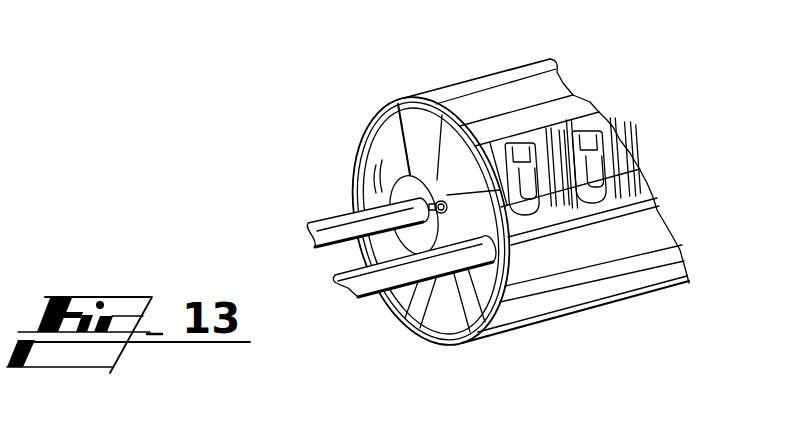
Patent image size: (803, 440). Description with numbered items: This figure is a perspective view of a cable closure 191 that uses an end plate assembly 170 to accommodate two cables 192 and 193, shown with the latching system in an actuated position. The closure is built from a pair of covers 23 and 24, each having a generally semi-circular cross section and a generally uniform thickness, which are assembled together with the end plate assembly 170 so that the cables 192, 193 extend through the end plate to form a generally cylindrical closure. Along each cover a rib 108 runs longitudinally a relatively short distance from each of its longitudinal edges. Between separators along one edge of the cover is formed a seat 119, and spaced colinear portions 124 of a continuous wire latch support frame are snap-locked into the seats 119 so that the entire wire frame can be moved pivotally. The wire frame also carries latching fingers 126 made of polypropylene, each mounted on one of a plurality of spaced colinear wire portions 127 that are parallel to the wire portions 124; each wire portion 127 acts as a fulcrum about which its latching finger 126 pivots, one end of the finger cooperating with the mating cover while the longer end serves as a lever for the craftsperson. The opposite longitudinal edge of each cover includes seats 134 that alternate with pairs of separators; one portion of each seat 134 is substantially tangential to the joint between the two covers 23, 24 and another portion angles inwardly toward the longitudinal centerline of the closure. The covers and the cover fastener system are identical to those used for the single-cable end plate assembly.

The first cover 23 is at (477, 82).
The rib 108 is at (562, 118).
The latching finger 126 is at (582, 128).
The wire portion 127 is at (600, 138).
The seat 134 is at (597, 168).
The seat 119 is at (628, 183).
The colinear portion 124 is at (648, 207).
The cable 192 is at (308, 222).
The cable 193 is at (370, 296).
The end plate assembly 170 is at (450, 338).
The cable closure 191 is at (538, 333).
The second cover 24 is at (622, 300).